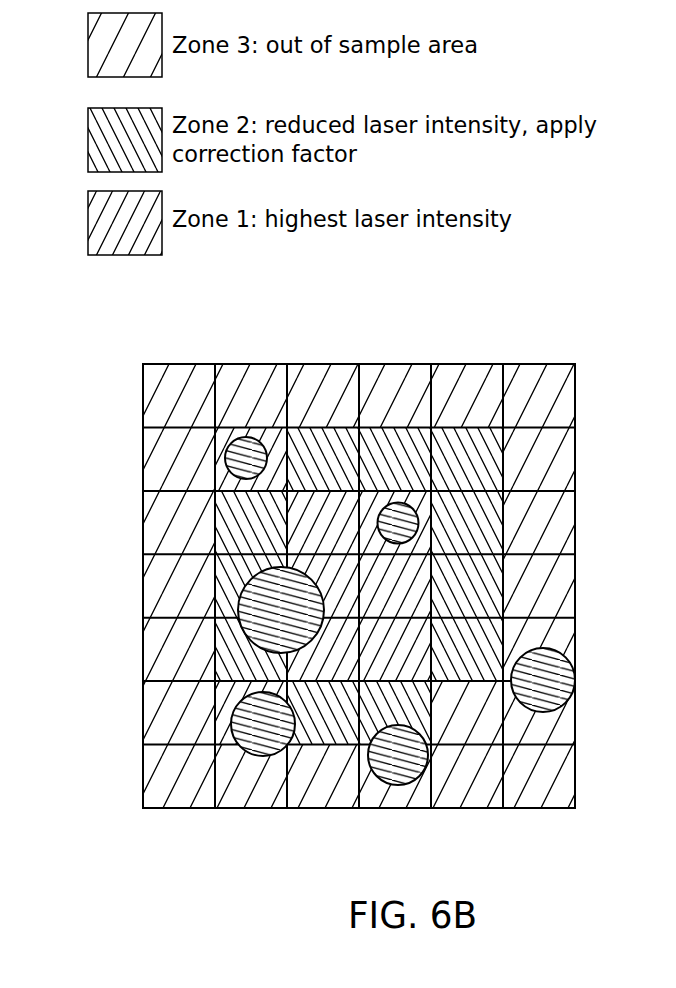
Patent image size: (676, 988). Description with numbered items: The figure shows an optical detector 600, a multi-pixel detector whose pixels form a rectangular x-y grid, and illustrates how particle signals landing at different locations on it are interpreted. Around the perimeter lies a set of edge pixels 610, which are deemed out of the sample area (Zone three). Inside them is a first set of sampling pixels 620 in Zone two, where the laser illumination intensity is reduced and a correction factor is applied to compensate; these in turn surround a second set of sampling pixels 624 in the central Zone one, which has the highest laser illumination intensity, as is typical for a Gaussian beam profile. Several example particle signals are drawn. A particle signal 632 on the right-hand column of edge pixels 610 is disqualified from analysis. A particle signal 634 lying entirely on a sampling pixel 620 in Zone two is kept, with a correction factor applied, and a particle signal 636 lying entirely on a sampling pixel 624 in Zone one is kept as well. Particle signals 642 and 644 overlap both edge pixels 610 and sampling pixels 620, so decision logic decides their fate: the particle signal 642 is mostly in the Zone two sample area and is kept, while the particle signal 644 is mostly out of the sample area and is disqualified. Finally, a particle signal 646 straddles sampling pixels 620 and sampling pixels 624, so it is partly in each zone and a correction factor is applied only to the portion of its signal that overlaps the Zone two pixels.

The optical detector 600 is at (421, 338).
The edge pixels 610 is at (360, 614).
The first set of sampling pixels 620 is at (281, 582).
The second set of sampling pixels 624 is at (357, 585).
The particle signal 632 is at (575, 680).
The particle signal 634 is at (239, 454).
The particle signal 636 is at (415, 522).
The particle signal 642 is at (265, 755).
The particle signal 644 is at (397, 772).
The particle signal 646 is at (250, 605).